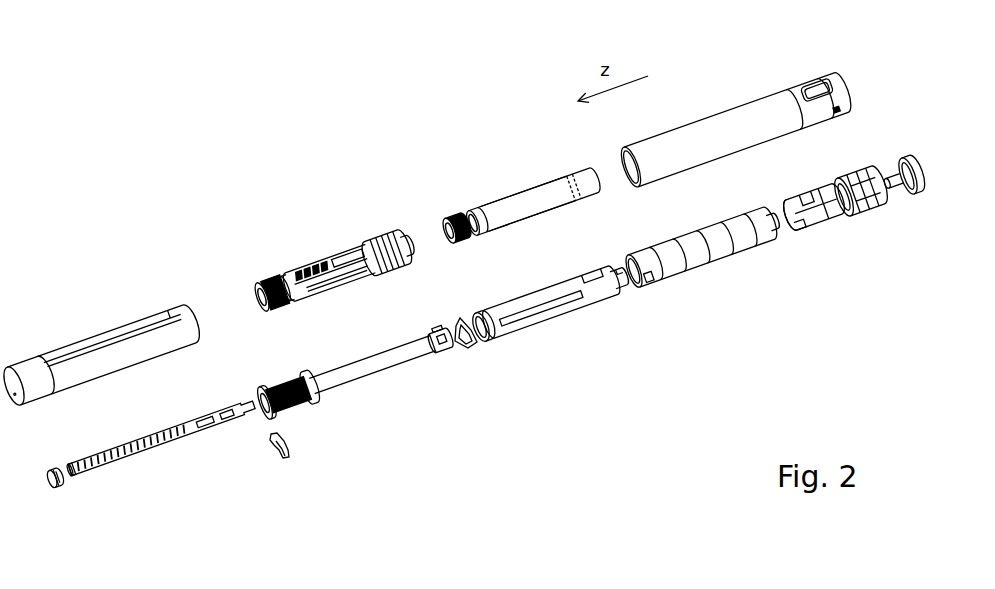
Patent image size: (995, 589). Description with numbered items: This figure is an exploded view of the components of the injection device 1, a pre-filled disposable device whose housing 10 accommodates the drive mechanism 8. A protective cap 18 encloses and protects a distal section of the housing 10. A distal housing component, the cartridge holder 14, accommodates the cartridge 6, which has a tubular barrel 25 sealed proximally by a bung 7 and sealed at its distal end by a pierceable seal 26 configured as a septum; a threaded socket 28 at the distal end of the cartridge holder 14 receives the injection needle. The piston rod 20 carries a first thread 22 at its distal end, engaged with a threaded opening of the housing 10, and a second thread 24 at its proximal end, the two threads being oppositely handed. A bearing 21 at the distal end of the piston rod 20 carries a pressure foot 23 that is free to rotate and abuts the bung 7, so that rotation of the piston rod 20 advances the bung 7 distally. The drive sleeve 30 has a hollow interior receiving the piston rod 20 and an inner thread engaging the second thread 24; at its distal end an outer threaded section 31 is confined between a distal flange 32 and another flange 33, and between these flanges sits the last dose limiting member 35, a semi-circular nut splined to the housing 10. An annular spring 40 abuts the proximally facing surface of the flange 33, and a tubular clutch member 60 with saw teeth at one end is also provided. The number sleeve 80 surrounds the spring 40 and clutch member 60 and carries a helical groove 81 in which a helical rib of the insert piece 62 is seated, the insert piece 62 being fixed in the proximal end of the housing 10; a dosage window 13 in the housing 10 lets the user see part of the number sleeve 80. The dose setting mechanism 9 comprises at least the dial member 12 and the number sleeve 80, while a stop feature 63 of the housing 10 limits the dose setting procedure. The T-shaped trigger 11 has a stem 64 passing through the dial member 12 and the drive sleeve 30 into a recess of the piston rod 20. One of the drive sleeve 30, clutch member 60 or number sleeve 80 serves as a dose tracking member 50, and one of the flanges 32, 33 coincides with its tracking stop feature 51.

The injection device 1 is at (417, 160).
The cartridge 6 is at (529, 200).
The bung 7 is at (582, 178).
The drive mechanism 8 is at (516, 412).
The dose setting mechanism 9 is at (710, 335).
The housing 10 is at (692, 118).
The trigger 11 is at (901, 150).
The dial member 12 is at (855, 168).
The dosage window 13 is at (822, 88).
The cartridge holder 14 is at (322, 240).
The protective cap 18 is at (170, 314).
The piston rod 20 is at (153, 470).
The bearing 21 is at (71, 478).
The first thread 22 is at (90, 460).
The pressure foot 23 is at (48, 492).
The second thread 24 is at (232, 424).
The barrel 25 is at (488, 192).
The seal 26 is at (452, 214).
The threaded socket 28 is at (262, 283).
The drive sleeve 30 is at (410, 387).
The threaded section 31 is at (292, 380).
The flange 32 is at (264, 390).
The flange 33 is at (315, 408).
The last dose limiting member 35 is at (277, 462).
The spring 40 is at (471, 355).
The dose tracking member 50 is at (764, 270).
The tracking stop feature 51 is at (648, 274).
The clutch member 60 is at (550, 330).
The insert piece 62 is at (812, 186).
The stop feature 63 is at (791, 228).
The stem 64 is at (887, 183).
The number sleeve 80 is at (694, 262).
The groove 81 is at (747, 248).